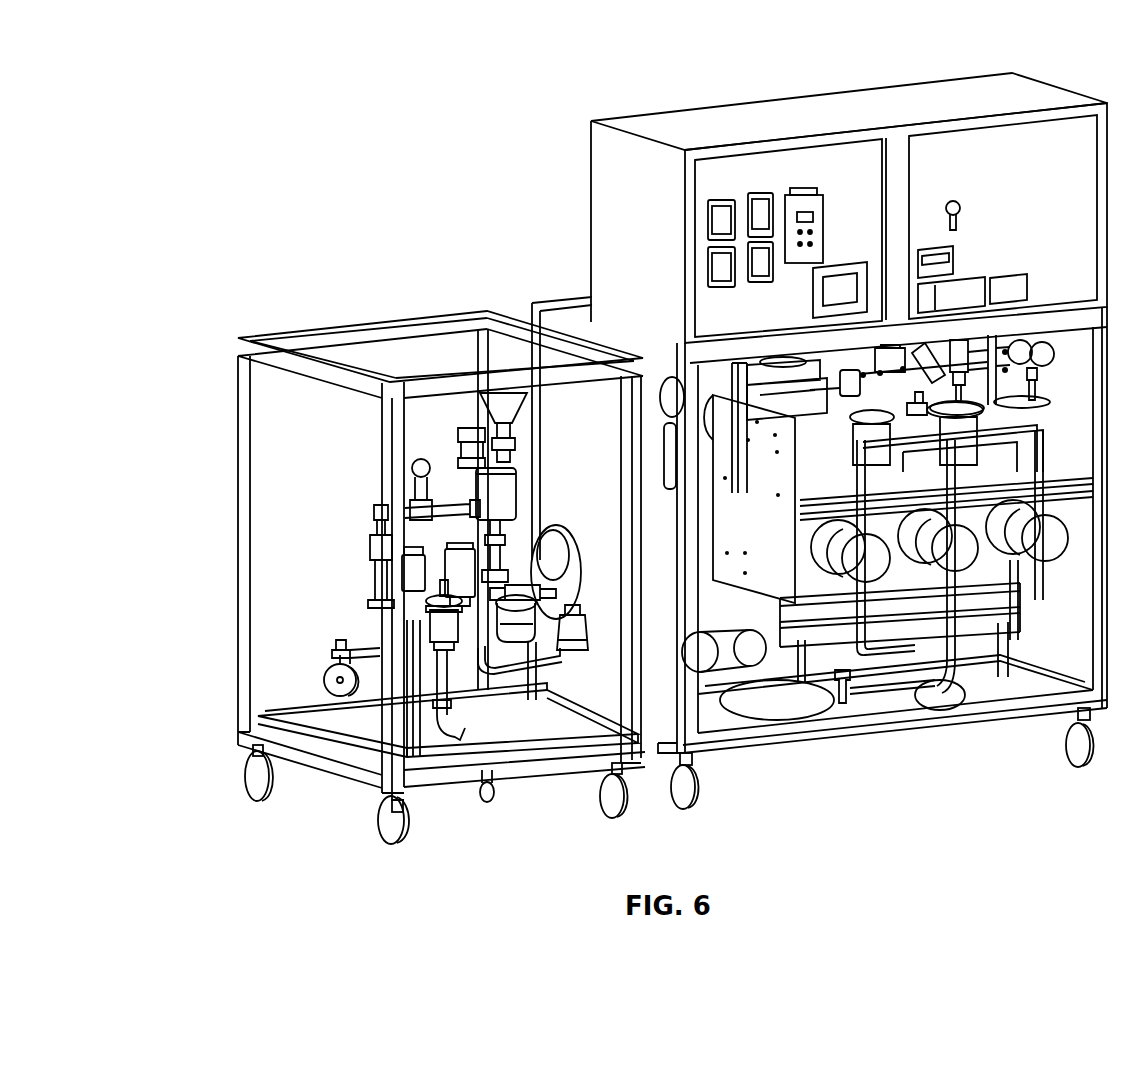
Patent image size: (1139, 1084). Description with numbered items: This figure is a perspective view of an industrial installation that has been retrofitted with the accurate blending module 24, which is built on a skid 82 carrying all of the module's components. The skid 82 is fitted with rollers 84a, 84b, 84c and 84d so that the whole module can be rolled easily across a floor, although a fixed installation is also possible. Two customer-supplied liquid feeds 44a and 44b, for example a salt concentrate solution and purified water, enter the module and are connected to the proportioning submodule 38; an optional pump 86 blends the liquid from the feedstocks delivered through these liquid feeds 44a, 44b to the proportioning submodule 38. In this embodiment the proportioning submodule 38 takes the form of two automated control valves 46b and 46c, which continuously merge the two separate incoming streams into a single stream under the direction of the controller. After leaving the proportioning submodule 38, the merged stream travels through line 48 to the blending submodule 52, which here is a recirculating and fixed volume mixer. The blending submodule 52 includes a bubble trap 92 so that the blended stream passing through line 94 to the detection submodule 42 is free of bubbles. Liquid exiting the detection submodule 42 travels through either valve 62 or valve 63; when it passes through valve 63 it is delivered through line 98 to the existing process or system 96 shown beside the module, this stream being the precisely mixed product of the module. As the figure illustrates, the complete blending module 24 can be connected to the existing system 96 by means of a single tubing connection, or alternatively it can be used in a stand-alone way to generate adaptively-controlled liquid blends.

The accurate blending module 24 is at (423, 826).
The proportioning submodule 38 is at (440, 600).
The detection submodule 42 is at (523, 673).
The liquid feed 44a is at (405, 722).
The liquid feed 44b is at (460, 732).
The control valve 46b is at (420, 550).
The control valve 46c is at (468, 548).
The line 48 is at (333, 653).
The blending submodule 52 is at (377, 517).
The valve 62 is at (542, 590).
The valve 63 is at (570, 640).
The skid 82 is at (230, 562).
The roller 84a is at (248, 780).
The roller 84b is at (390, 822).
The roller 84c is at (640, 808).
The roller 84d is at (496, 786).
The pump 86 is at (478, 690).
The bubble trap 92 is at (470, 428).
The line 94 is at (497, 540).
The existing process or system 96 is at (896, 767).
The line 98 is at (565, 622).